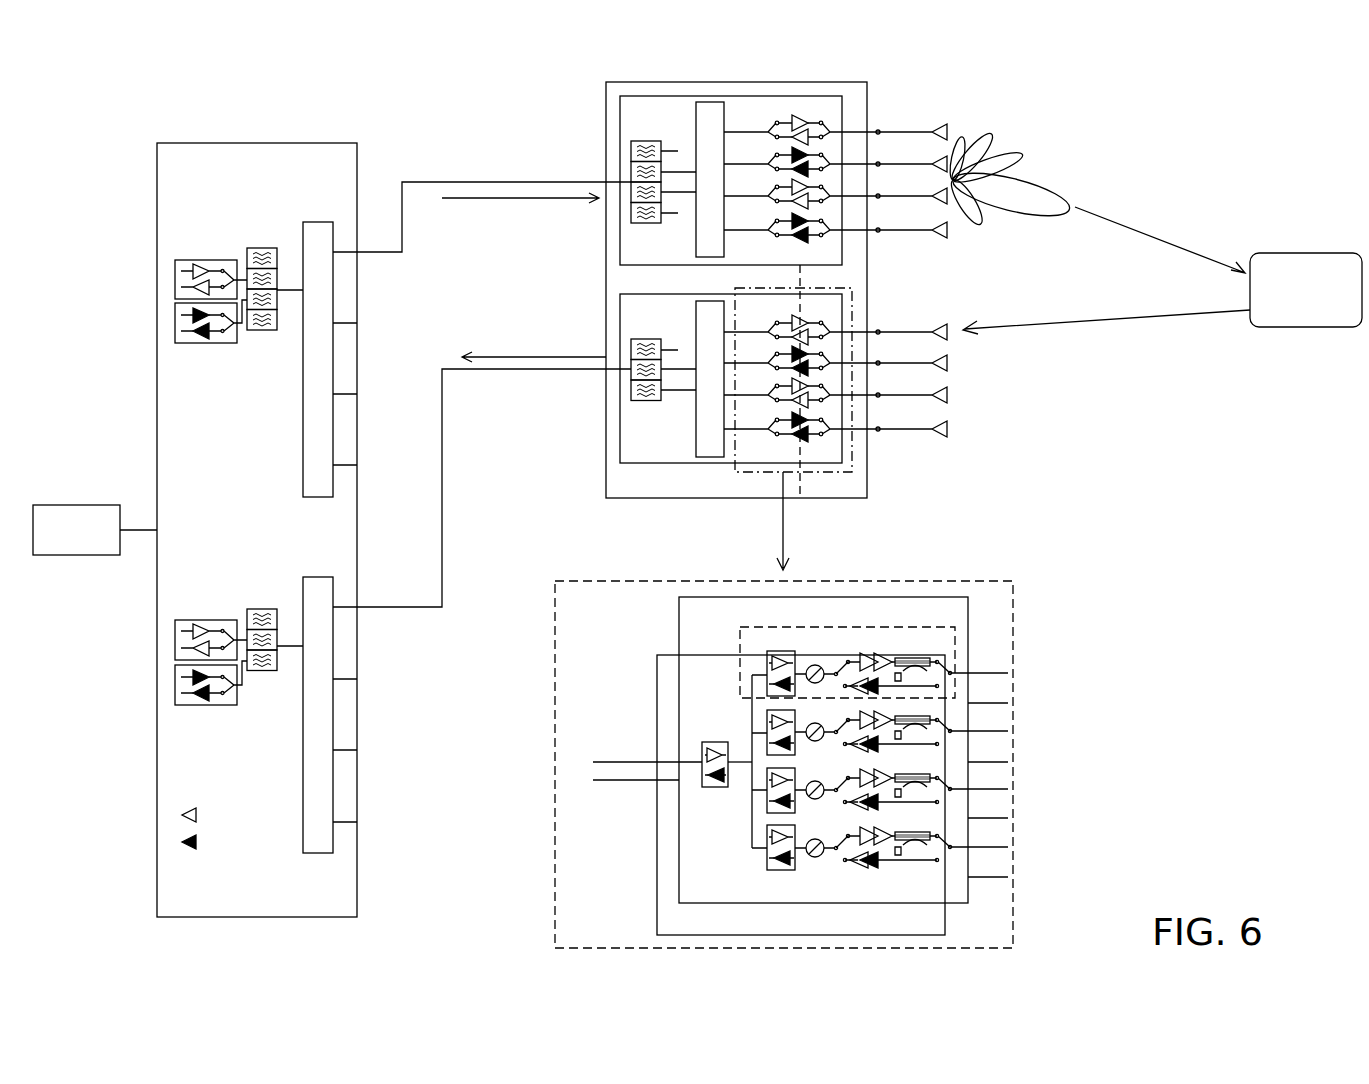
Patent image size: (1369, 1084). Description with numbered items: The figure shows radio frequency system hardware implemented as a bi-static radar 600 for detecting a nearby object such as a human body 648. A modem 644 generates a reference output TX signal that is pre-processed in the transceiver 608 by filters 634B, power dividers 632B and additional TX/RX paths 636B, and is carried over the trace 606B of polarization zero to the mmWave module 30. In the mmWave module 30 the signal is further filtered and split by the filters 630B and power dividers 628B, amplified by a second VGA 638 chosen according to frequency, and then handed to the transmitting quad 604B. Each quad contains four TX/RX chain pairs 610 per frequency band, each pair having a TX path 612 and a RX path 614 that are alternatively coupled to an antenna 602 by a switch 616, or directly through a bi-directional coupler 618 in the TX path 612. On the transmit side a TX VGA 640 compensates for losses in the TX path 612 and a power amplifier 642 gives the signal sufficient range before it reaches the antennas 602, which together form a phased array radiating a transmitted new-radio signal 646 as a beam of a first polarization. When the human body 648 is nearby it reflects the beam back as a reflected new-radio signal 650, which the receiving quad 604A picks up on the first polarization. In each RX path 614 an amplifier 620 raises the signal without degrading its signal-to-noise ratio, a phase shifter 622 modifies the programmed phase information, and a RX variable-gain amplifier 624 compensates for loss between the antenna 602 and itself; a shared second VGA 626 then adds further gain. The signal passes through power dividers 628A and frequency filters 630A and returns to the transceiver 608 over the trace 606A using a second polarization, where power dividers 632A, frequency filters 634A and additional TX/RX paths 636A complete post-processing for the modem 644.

The mmWave module 30 is at (840, 82).
The bi-static radar 600 is at (134, 113).
The antennas 602 is at (950, 130).
The quad 604A is at (842, 310).
The quad 604B is at (842, 112).
The trace 606A is at (412, 607).
The trace 606B is at (420, 182).
The transceiver 608 is at (352, 143).
The TX/RX chain pair 610 is at (915, 607).
The TX path 612 is at (868, 652).
The RX path 614 is at (940, 673).
The switch 616 is at (950, 729).
The bi-directional coupler 618 is at (920, 714).
The amplifier 620 is at (882, 862).
The phase shifter 622 is at (818, 858).
The RX variable-gain amplifier 624 is at (766, 861).
The second VGA 626 is at (712, 788).
The power dividers 628A is at (693, 425).
The power dividers 628B is at (694, 126).
The frequency filters 630A is at (640, 401).
The filters 630B is at (640, 140).
The power dividers 632A is at (318, 577).
The power dividers 632B is at (318, 222).
The frequency filters 634A is at (258, 672).
The filters 634B is at (258, 332).
The additional TX/RX paths 636A is at (205, 620).
The additional TX/RX paths 636B is at (205, 260).
The second VGA 638 is at (702, 758).
The TX VGA 640 is at (766, 664).
The power amplifier 642 is at (880, 832).
The modem 644 is at (78, 504).
The TX 5G NR signal 646 is at (1156, 238).
The human body 648 is at (1310, 253).
The RX 5G NR signal 650 is at (1112, 318).